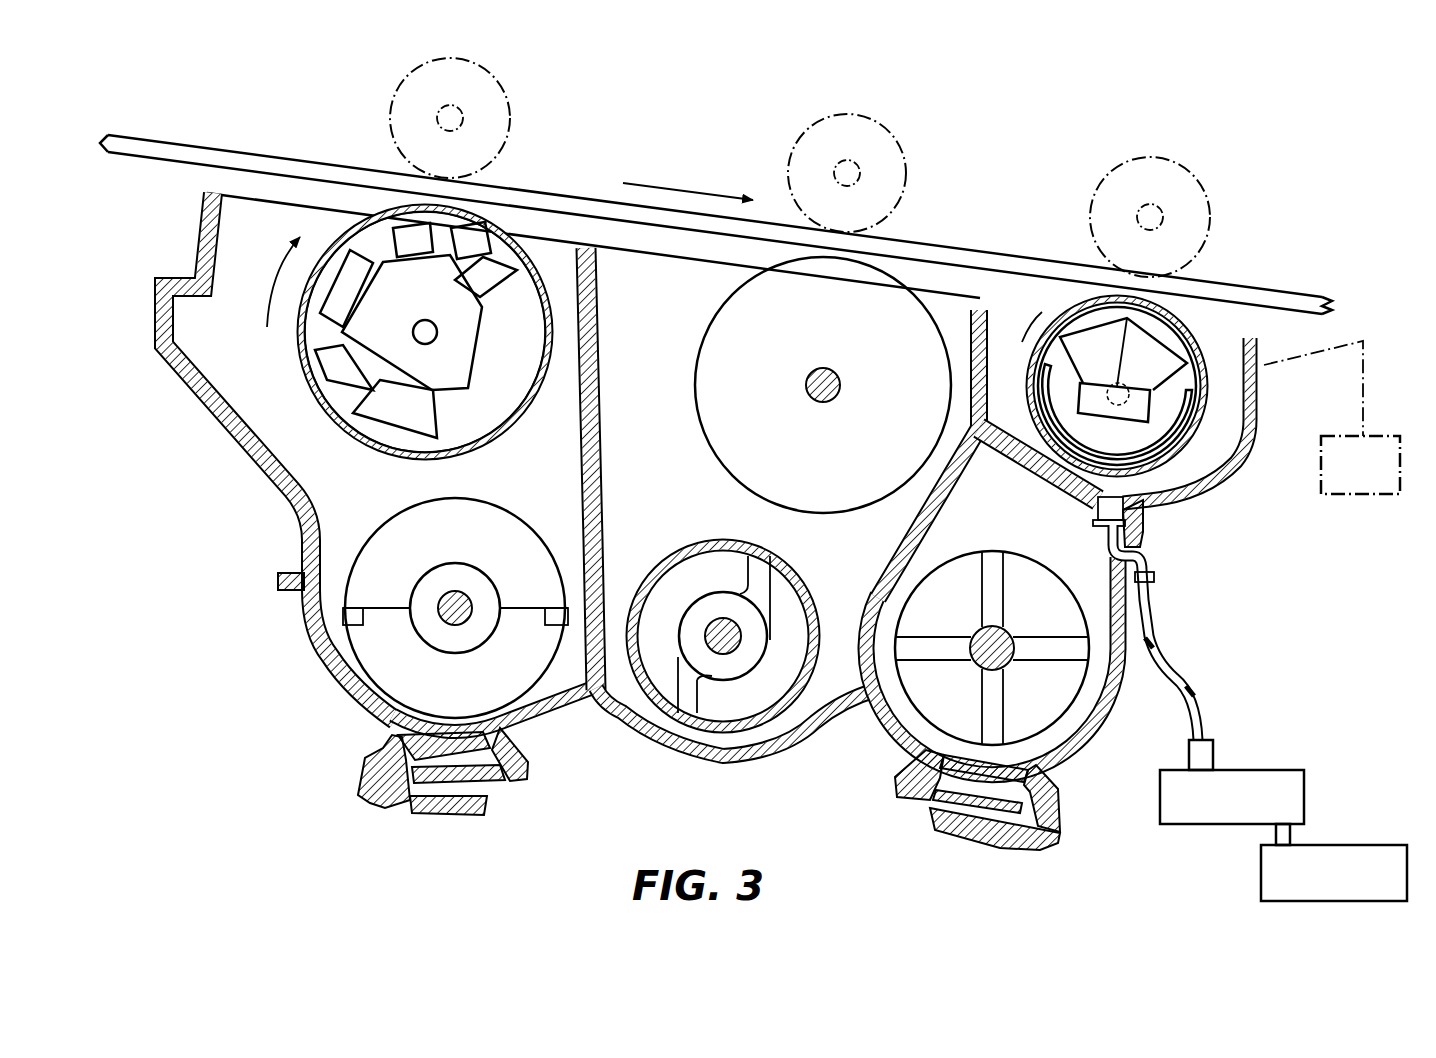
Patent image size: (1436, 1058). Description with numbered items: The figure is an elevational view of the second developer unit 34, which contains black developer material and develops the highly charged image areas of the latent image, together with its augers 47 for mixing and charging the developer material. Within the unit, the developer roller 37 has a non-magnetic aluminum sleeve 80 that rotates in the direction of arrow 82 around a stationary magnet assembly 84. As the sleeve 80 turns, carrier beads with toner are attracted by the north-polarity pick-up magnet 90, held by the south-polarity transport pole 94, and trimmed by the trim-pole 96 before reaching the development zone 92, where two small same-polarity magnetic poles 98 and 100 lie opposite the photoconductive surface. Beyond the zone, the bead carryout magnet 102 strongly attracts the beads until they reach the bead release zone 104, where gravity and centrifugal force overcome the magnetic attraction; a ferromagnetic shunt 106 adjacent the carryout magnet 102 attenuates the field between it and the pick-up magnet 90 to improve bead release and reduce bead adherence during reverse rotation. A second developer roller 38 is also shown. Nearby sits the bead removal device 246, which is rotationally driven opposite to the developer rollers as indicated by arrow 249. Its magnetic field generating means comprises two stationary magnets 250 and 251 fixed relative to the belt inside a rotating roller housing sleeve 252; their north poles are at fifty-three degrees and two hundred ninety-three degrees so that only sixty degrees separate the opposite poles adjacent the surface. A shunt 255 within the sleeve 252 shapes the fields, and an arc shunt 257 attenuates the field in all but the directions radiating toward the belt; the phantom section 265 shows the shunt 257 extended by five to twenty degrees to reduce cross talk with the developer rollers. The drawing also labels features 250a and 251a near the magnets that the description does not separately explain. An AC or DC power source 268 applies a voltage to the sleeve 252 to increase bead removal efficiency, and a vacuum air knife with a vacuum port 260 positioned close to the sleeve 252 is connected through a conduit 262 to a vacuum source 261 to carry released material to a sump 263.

The development zone 92 is at (403, 192).
The magnetic pole 98 is at (384, 212).
The magnetic pole 100 is at (497, 204).
The developer roller 37 is at (446, 286).
The arrow 82 is at (278, 272).
The trim-pole 96 is at (333, 307).
The transport pole 94 is at (322, 363).
The pick-up magnet 90 is at (373, 413).
The magnet assembly 84 is at (465, 362).
The bead carryout magnet 102 is at (535, 258).
The ferromagnetic shunt 106 is at (553, 282).
The sleeve 80 is at (556, 344).
The bead release zone 104 is at (550, 407).
The developer roller 38 is at (888, 262).
The arrow 249 is at (1013, 368).
The magnet 250 is at (1092, 322).
The magnet 251 is at (1160, 330).
The bead removal device 246 is at (1153, 358).
The magnet 251a is at (1157, 380).
The roller housing sleeve 252 is at (1200, 413).
The phantom section 265 is at (975, 378).
The arc shunt 257 is at (1224, 486).
The shunt 255 is at (1172, 499).
The vacuum port 260 is at (1146, 538).
The roller shell 250a is at (1043, 365).
The AC or DC power source 268 is at (1362, 482).
The conduit 262 is at (1164, 668).
The vacuum source 261 is at (1161, 781).
The sump 263 is at (1357, 865).
The developer unit 34 is at (318, 660).
The augers 47 is at (515, 680).